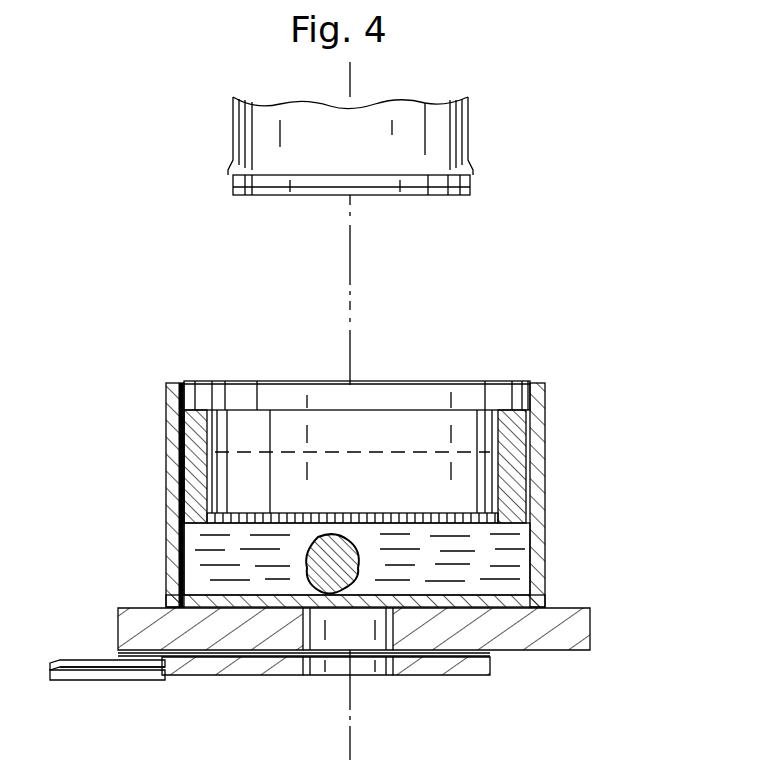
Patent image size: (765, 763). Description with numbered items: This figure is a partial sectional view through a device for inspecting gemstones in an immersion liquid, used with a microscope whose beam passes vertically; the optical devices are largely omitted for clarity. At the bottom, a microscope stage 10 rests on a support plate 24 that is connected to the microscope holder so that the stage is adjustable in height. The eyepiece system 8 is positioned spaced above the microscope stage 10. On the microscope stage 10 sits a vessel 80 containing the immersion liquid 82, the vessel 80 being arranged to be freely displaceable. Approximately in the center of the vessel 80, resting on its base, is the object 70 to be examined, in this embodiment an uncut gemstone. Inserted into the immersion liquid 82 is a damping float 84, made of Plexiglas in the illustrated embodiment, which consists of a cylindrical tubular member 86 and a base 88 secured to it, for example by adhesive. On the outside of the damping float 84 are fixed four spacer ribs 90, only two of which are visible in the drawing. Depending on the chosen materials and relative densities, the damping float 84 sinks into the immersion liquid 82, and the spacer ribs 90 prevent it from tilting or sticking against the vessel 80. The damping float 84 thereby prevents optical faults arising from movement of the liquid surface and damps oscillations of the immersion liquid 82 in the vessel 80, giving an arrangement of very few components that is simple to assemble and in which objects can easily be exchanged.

The eyepiece system 8 is at (494, 114).
The microscope stage 10 is at (590, 620).
The support plate 24 is at (98, 681).
The object 70 is at (330, 597).
The vessel 80 is at (536, 457).
The immersion liquid 82 is at (243, 578).
The damping float 84 is at (503, 386).
The cylindrical tubular member 86 is at (518, 413).
The base 88 is at (508, 521).
The spacer ribs 90 is at (196, 430).